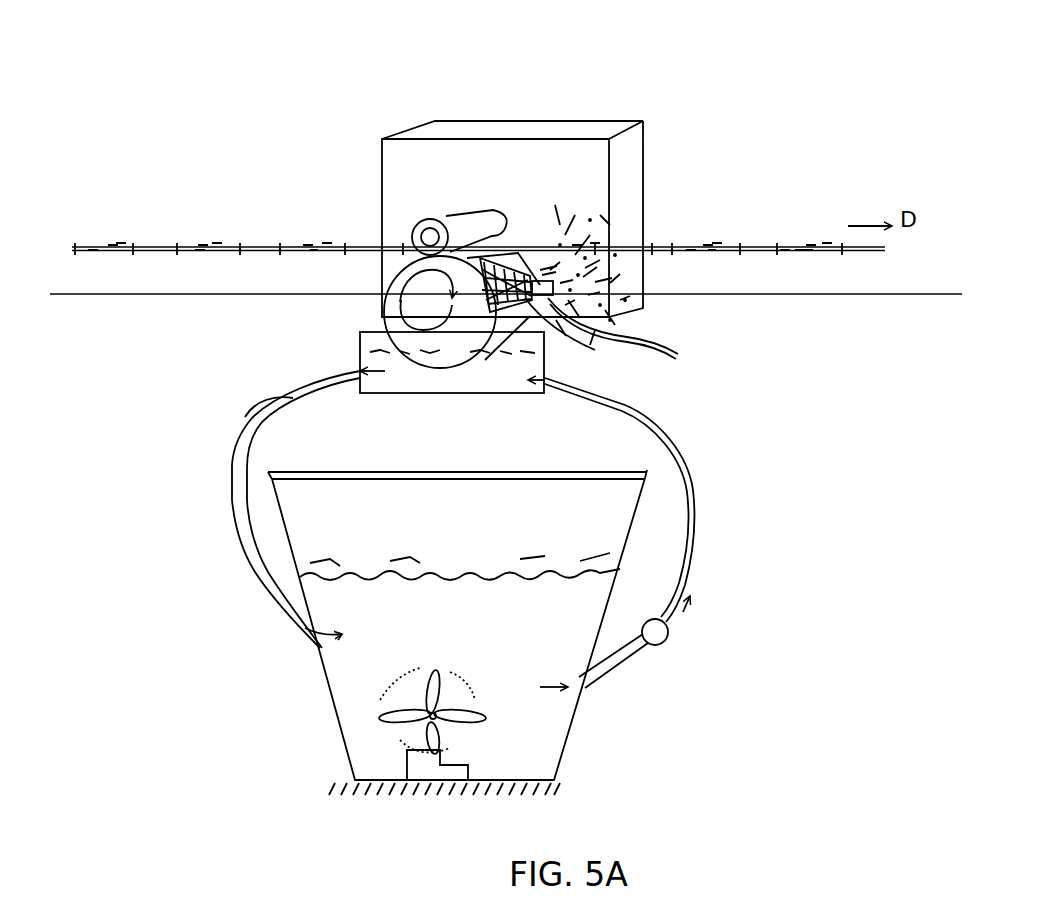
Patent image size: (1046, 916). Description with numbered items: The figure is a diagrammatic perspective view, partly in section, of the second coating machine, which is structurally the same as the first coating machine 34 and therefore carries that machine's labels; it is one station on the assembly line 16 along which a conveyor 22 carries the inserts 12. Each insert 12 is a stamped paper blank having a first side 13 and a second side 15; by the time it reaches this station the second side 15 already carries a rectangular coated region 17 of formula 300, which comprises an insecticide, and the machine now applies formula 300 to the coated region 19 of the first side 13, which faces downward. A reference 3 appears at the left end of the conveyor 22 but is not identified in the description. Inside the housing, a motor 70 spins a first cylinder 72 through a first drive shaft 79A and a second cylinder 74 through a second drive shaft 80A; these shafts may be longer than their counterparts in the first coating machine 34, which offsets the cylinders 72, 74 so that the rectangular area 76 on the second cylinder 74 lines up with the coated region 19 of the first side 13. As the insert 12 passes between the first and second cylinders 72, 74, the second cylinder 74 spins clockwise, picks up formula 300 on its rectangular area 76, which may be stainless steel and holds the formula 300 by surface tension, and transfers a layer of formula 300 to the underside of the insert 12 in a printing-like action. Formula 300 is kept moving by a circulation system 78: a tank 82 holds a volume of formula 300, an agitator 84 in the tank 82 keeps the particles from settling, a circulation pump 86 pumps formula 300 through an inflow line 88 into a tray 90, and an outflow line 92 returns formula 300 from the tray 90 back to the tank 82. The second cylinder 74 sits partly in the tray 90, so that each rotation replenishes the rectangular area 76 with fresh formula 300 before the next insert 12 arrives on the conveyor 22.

The cable section 3 is at (96, 256).
The insert 12 is at (96, 243).
The first side 13 is at (200, 256).
The second side 15 is at (110, 243).
The assembly line 16 is at (225, 130).
The coated region 17 is at (120, 240).
The coated region 19 is at (712, 258).
The conveyor 22 is at (106, 253).
The first coating machine 34 is at (470, 95).
The motor 70 is at (523, 160).
The first cylinder 72 is at (450, 216).
The second cylinder 74 is at (462, 310).
The rectangular area 76 is at (579, 334).
The circulation system 78 is at (745, 580).
The first drive shaft 79A is at (528, 225).
The second drive shaft 80A is at (634, 342).
The tank 82 is at (345, 697).
The agitator 84 is at (428, 720).
The circulation pump 86 is at (668, 636).
The inflow line 88 is at (690, 482).
The tray 90 is at (430, 396).
The outflow line 92 is at (287, 509).
The formula 300 is at (510, 395).